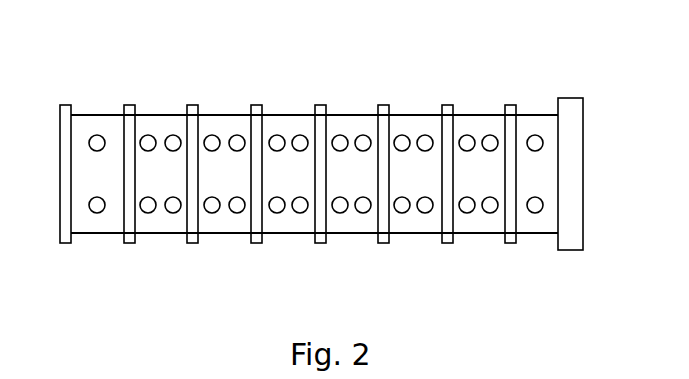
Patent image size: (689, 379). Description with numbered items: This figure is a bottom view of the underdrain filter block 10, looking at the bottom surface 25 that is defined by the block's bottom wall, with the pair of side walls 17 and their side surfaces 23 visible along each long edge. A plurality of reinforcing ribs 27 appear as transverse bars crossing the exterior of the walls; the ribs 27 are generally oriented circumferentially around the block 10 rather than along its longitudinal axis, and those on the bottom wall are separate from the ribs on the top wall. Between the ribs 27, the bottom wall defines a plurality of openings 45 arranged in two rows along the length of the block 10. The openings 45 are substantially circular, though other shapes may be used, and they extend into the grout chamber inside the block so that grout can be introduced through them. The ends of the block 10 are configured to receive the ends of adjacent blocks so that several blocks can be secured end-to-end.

The underdrain filter block 10 is at (86, 84).
The side walls 17 is at (358, 113).
The side surfaces 23 is at (474, 113).
The bottom surface 25 is at (420, 118).
The reinforcing ribs 27 is at (510, 105).
The openings 45 is at (97, 134).